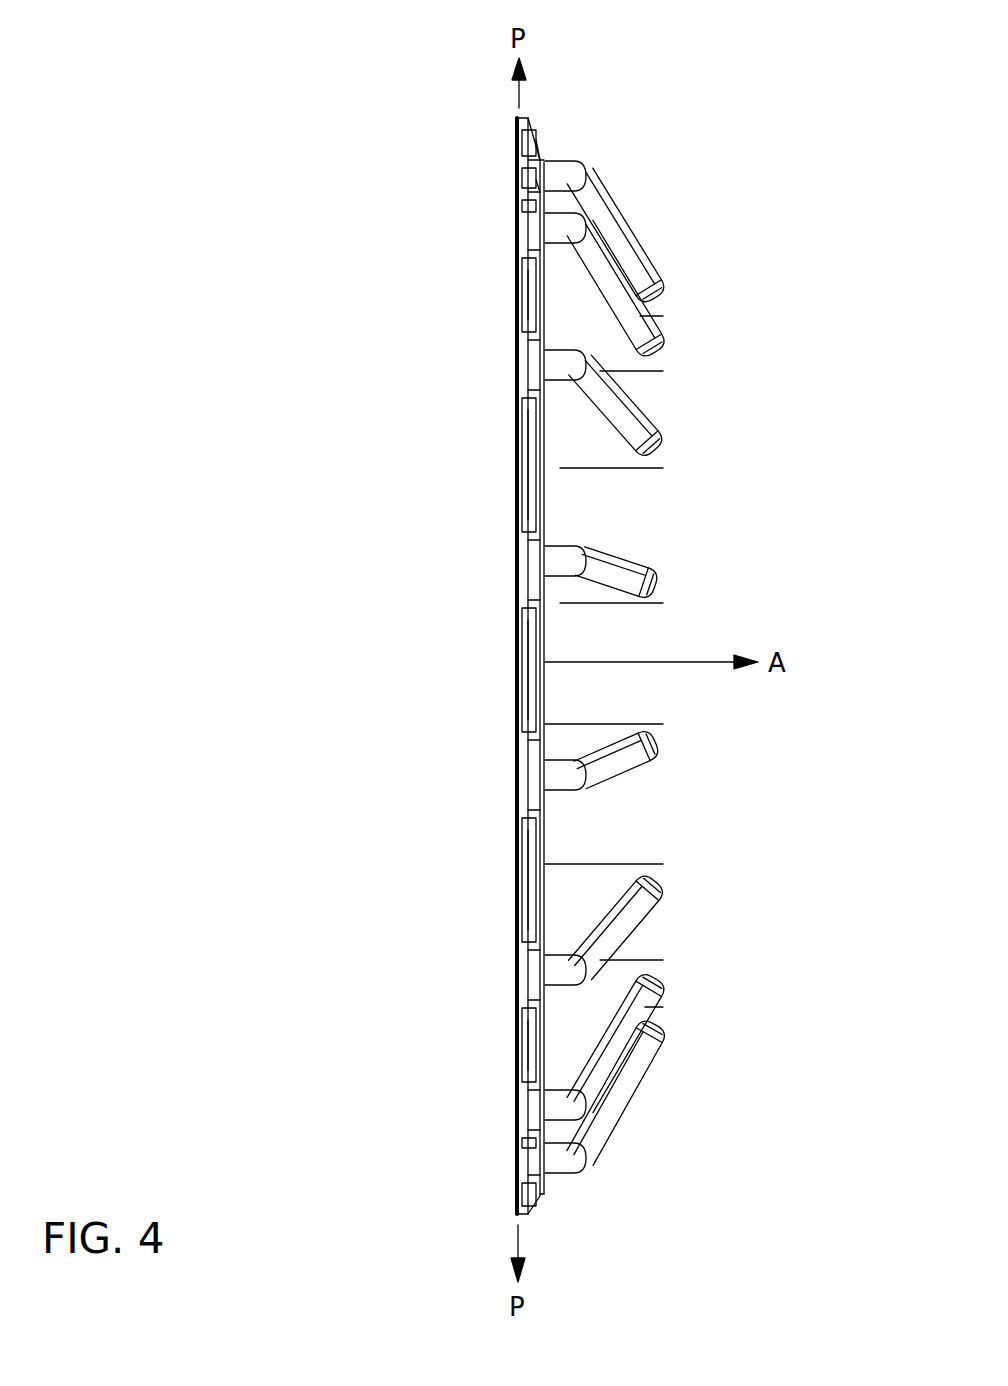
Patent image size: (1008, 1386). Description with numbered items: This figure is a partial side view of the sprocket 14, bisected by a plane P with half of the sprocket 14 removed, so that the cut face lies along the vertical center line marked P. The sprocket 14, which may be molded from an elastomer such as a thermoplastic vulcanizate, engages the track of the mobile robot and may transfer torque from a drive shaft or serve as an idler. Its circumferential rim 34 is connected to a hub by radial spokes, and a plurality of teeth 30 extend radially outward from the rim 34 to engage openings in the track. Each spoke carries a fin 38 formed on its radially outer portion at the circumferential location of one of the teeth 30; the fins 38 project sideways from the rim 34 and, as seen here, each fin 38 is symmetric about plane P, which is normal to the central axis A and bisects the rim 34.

The sprocket 14 is at (768, 215).
The teeth 30 is at (516, 127).
The circumferential rim 34 is at (516, 205).
The fin 38 is at (585, 258).